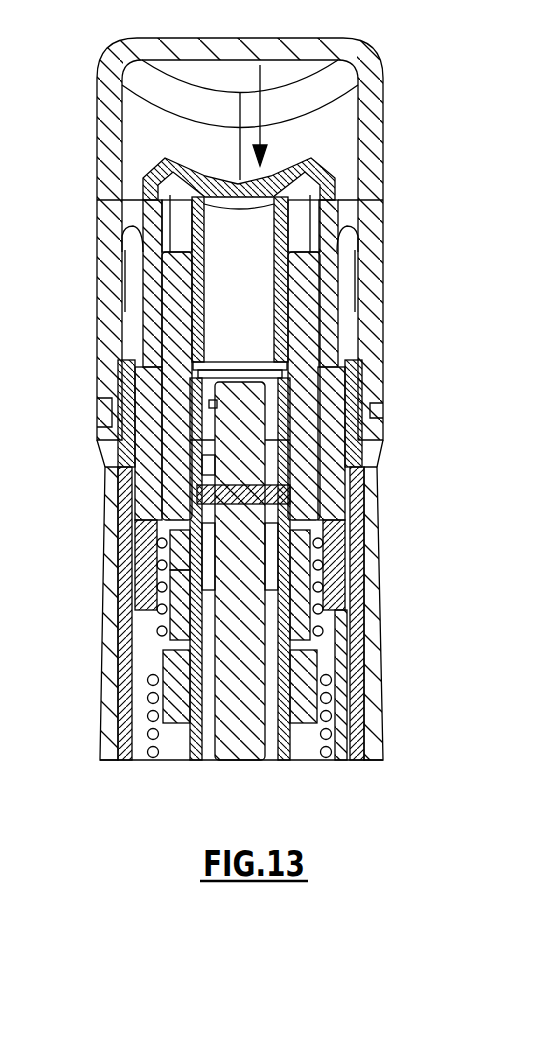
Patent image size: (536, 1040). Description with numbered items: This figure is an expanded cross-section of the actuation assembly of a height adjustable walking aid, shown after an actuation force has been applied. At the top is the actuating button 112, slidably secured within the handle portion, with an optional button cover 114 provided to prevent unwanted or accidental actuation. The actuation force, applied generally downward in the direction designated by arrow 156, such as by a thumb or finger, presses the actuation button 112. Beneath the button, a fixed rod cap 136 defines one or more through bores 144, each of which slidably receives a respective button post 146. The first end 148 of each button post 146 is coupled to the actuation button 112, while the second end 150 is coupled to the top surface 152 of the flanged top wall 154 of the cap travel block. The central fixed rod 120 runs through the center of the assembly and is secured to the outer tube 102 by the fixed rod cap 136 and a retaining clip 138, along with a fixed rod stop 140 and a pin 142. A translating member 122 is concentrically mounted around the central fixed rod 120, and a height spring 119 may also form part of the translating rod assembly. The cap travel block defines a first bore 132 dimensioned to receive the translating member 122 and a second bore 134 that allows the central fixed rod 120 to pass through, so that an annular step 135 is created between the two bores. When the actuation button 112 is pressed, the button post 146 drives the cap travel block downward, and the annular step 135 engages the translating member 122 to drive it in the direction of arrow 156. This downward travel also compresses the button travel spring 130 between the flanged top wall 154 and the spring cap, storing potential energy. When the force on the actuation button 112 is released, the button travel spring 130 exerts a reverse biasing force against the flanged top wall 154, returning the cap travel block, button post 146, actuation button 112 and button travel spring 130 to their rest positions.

The outer tube 102 is at (372, 619).
The actuating button 112 is at (165, 160).
The button cover 114 is at (97, 95).
The height spring 119 is at (355, 725).
The central fixed rod 120 is at (236, 744).
The translating member 122 is at (277, 744).
The button travel spring 130 is at (185, 592).
The first bore 132 is at (335, 672).
The second bore 134 is at (225, 582).
The annular step 135 is at (150, 627).
The fixed rod cap 136 is at (160, 399).
The retaining clip 138 is at (213, 400).
The fixed rod stop 140 is at (205, 449).
The pin 142 is at (212, 520).
The through bore 144 is at (150, 352).
The button post 146 is at (300, 287).
The first end 148 is at (130, 207).
The second end 150 is at (320, 497).
The top surface 152 is at (203, 462).
The flanged top wall 154 is at (335, 552).
The arrow 156 is at (264, 137).